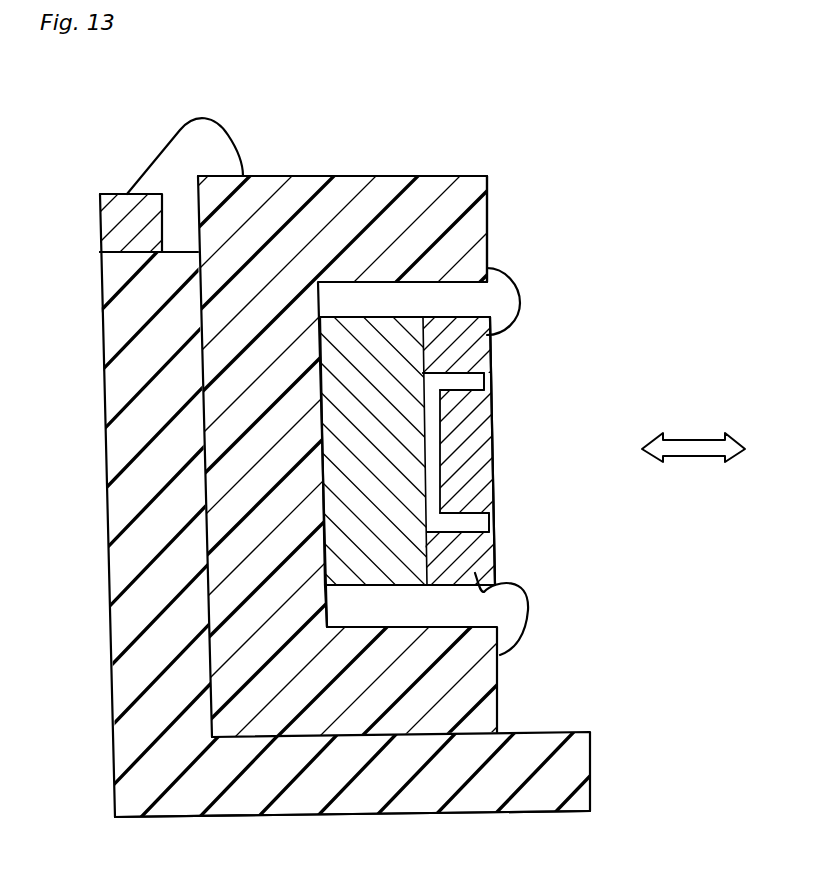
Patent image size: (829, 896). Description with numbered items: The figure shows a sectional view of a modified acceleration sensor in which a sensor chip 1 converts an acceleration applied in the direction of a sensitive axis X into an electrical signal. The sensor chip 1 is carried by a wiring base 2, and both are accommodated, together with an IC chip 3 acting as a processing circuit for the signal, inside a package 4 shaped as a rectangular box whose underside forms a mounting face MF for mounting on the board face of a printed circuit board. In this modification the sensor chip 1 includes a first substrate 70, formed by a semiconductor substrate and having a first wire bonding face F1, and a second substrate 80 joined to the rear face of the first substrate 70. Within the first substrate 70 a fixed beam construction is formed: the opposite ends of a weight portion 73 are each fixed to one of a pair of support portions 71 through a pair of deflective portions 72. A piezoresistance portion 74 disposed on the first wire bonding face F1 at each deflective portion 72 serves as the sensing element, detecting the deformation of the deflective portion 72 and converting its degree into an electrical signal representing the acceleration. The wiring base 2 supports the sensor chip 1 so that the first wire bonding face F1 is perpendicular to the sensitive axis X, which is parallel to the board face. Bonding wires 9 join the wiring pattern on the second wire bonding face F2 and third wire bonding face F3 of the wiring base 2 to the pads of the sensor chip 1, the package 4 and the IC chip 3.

The sensor chip 1 is at (497, 450).
The wiring base 2 is at (307, 175).
The IC chip 3 is at (117, 193).
The package 4 is at (572, 768).
The bonding wires 9 is at (213, 120).
The first substrate 70 is at (497, 560).
The support portions 71 is at (490, 350).
The deflective portions 72 is at (492, 385).
The weight portion 73 is at (493, 480).
The piezoresistance portion 74 is at (492, 375).
The second substrate 80 is at (398, 588).
The first wire bonding face F1 is at (493, 360).
The second wire bonding face F2 is at (488, 207).
The third wire bonding face F3 is at (380, 175).
The mounting face MF is at (503, 813).
The sensitive axis X is at (693, 432).